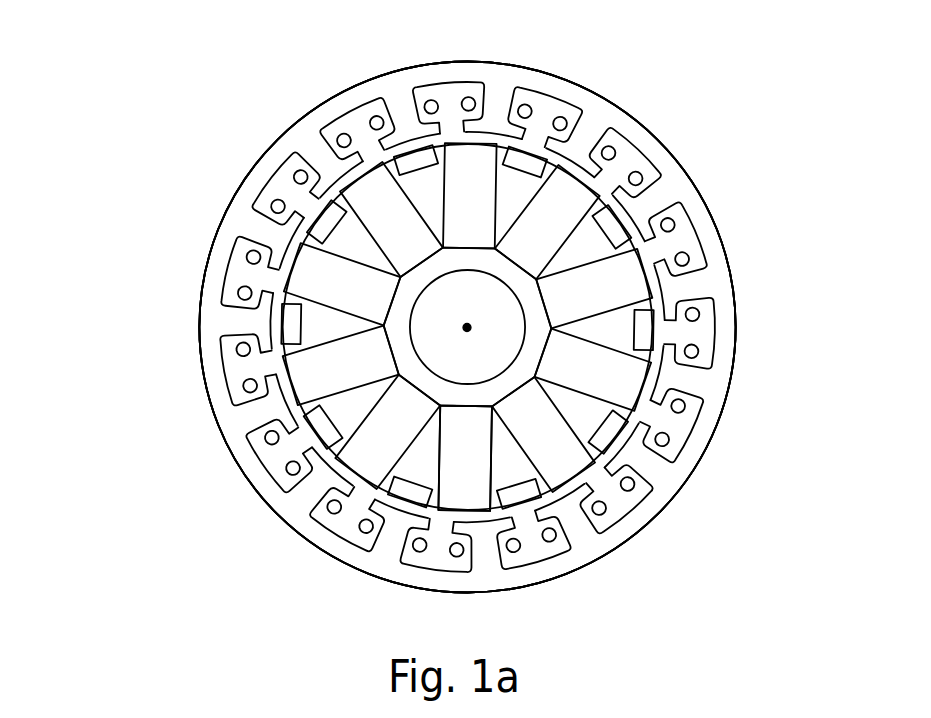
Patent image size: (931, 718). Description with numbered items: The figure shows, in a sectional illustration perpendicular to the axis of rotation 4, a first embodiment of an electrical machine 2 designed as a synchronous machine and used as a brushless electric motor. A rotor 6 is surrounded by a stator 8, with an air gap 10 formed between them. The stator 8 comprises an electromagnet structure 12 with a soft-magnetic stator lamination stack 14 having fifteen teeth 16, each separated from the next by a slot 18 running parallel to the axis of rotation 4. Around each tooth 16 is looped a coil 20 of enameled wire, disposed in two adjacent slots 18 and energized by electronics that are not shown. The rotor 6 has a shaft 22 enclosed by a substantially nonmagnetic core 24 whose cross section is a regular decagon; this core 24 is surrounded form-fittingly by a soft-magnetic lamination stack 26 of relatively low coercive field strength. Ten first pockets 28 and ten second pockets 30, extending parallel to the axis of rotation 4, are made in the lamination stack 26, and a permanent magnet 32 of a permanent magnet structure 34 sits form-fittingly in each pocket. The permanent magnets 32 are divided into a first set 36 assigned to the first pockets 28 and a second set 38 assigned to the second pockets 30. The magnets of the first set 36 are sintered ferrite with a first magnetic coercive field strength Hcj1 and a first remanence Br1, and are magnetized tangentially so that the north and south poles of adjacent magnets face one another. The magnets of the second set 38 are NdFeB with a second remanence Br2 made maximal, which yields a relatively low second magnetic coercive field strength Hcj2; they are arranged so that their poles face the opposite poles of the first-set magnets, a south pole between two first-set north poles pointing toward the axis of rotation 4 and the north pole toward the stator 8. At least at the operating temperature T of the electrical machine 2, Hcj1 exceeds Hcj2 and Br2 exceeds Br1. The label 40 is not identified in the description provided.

The electrical machine 2 is at (736, 92).
The axis of rotation 4 is at (463, 328).
The rotor 6 is at (583, 247).
The stator 8 is at (717, 405).
The air gap 10 is at (647, 267).
The electromagnet structure 12 is at (671, 437).
The stator lamination stack 14 is at (393, 90).
The teeth 16 is at (327, 160).
The slot 18 is at (277, 190).
The coil 20 is at (551, 539).
The shaft 22 is at (480, 373).
The core 24 is at (430, 378).
The lamination stack 26 is at (420, 480).
The first pockets 28 is at (483, 468).
The second pockets 30 is at (492, 490).
The permanent magnet 32 is at (627, 280).
The permanent magnet structure 34 is at (553, 195).
The first set 36 is at (603, 383).
The second set 38 is at (603, 432).
The shaft 40 is at (593, 711).
The first remanence Br1 is at (302, 367).
The second remanence Br2 is at (290, 330).
The first magnetic coercive field strength Hcj1 is at (467, 172).
The second magnetic coercive field strength Hcj2 is at (420, 160).
The operating temperature T is at (132, 216).